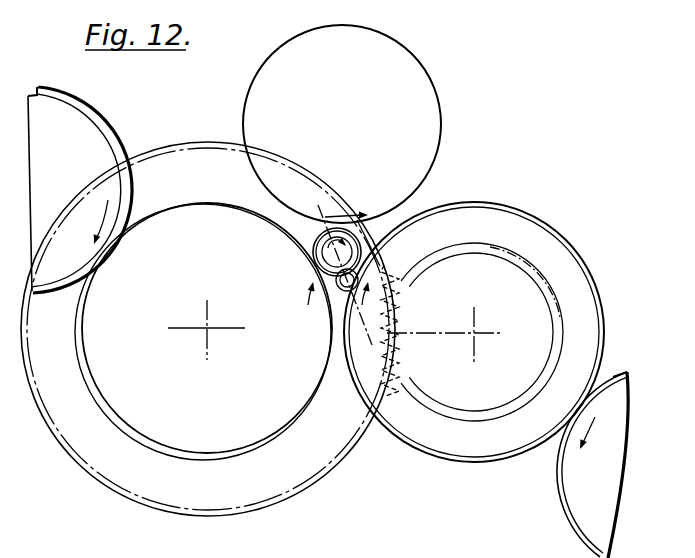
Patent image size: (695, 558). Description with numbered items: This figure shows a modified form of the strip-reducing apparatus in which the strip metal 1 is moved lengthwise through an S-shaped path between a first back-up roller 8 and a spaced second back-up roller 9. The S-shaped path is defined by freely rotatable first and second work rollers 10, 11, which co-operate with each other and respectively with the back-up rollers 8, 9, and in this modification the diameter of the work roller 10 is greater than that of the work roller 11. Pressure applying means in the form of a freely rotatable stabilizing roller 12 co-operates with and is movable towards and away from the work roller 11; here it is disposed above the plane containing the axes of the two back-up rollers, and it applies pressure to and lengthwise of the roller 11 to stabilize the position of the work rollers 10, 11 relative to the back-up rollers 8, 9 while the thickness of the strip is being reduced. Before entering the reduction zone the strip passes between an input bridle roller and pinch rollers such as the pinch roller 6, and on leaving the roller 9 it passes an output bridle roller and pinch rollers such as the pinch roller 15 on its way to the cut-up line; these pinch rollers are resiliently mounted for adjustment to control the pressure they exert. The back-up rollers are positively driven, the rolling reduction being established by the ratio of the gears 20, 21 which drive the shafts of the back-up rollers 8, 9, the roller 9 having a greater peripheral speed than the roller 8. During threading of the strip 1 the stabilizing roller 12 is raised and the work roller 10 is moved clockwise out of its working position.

The strip metal 1 is at (100, 134).
The pinch roller 6 is at (57, 115).
The first back-up roller 8 is at (203, 215).
The second back-up roller 9 is at (512, 226).
The first work roller 10 is at (357, 220).
The second work roller 11 is at (338, 281).
The pressure applying roller 12 is at (383, 52).
The pinch roller 15 is at (616, 390).
The gear 20 is at (200, 141).
The gear 21 is at (490, 247).